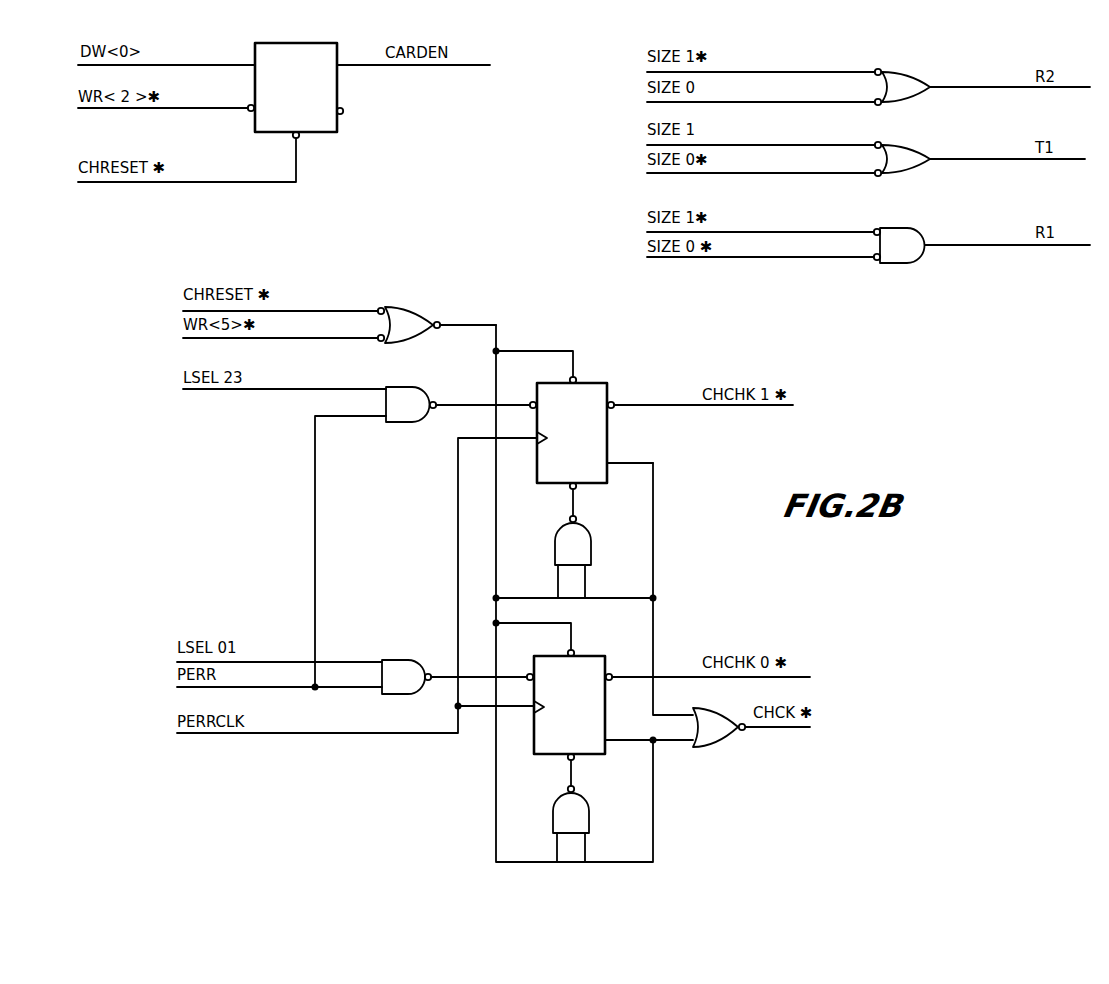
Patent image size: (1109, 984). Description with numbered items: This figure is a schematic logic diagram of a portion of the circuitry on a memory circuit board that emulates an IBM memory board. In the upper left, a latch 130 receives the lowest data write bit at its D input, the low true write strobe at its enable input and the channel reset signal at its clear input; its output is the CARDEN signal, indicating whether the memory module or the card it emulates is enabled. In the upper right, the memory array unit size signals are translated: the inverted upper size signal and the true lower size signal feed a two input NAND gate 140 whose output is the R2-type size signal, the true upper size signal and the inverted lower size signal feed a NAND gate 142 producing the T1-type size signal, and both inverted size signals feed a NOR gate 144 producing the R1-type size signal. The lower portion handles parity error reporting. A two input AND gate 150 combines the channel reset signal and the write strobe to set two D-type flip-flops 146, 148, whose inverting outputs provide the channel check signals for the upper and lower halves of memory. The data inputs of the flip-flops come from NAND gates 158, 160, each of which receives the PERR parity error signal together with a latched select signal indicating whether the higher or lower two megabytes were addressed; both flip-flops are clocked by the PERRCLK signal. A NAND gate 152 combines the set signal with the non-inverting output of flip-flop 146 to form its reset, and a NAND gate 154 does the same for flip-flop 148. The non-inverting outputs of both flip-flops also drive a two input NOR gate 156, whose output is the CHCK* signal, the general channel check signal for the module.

The latch 130 is at (327, 134).
The NAND gate 140 is at (925, 72).
The NAND gate 142 is at (923, 146).
The NOR gate 144 is at (923, 226).
The CHCHK 1 flip-flop 146 is at (595, 382).
The CHCHK 0 flip-flop 148 is at (586, 655).
The AND gate 150 is at (413, 306).
The NAND gate 152 is at (585, 530).
The NAND gate 154 is at (580, 798).
The NOR gate 156 is at (720, 750).
The NAND gate 158 is at (424, 385).
The NAND gate 160 is at (394, 660).